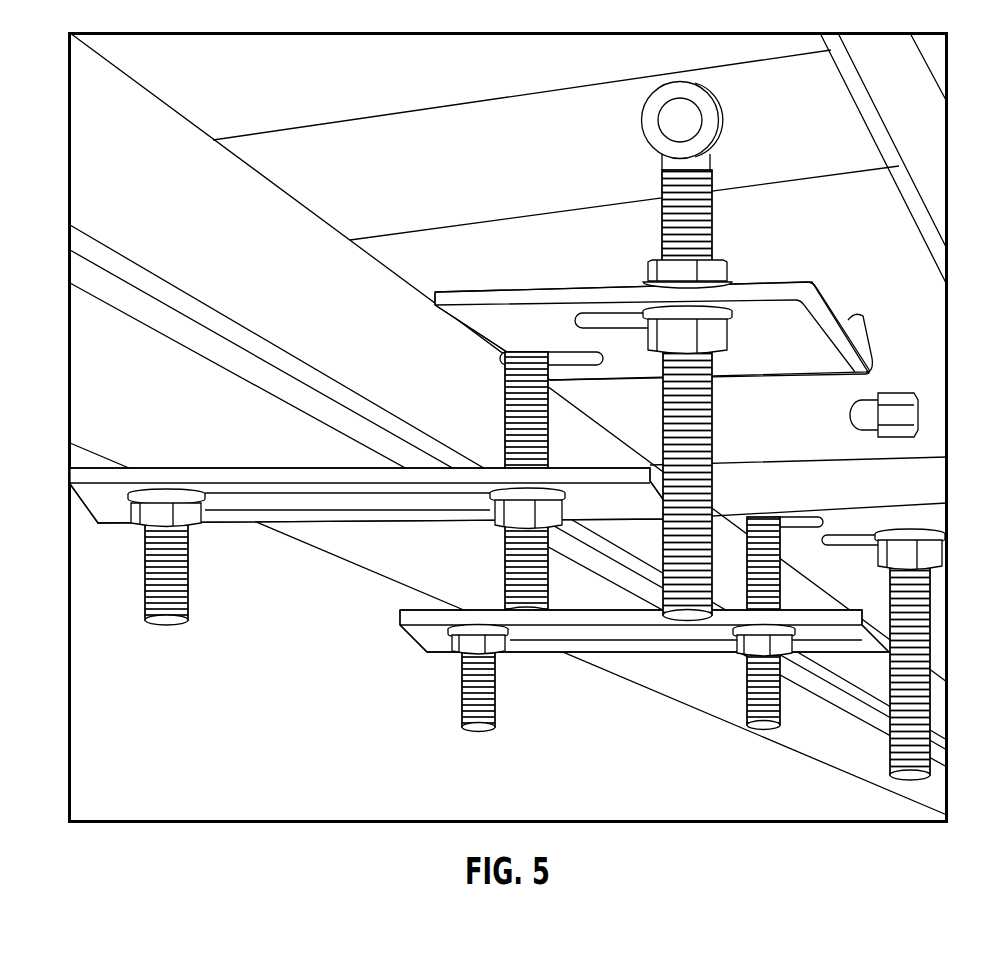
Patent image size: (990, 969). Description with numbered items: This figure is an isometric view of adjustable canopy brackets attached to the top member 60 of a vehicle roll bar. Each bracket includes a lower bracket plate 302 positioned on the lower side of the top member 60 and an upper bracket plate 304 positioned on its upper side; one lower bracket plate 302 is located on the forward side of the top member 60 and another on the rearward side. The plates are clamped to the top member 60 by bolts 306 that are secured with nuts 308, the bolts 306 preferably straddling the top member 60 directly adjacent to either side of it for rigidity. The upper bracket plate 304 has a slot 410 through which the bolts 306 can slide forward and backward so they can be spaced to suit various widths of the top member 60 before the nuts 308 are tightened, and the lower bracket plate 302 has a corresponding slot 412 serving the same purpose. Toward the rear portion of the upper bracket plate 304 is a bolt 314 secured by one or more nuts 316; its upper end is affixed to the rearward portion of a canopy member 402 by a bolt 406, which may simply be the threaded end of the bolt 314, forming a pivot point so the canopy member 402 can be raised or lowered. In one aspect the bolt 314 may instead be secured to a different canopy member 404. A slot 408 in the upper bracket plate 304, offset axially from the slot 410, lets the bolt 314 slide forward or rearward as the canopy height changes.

The top member 60 is at (295, 291).
The lower bracket plate 302 is at (232, 467).
The upper bracket plate 304 is at (816, 293).
The bolts 306 is at (505, 410).
The nuts 308 is at (140, 527).
The bolt 314 is at (662, 225).
The nuts 316 is at (728, 273).
The canopy member 402 is at (825, 117).
The canopy member 404 is at (920, 104).
The bolt 406 is at (642, 118).
The slot 408 is at (576, 323).
The slot 410 is at (569, 367).
The slot 412 is at (328, 510).